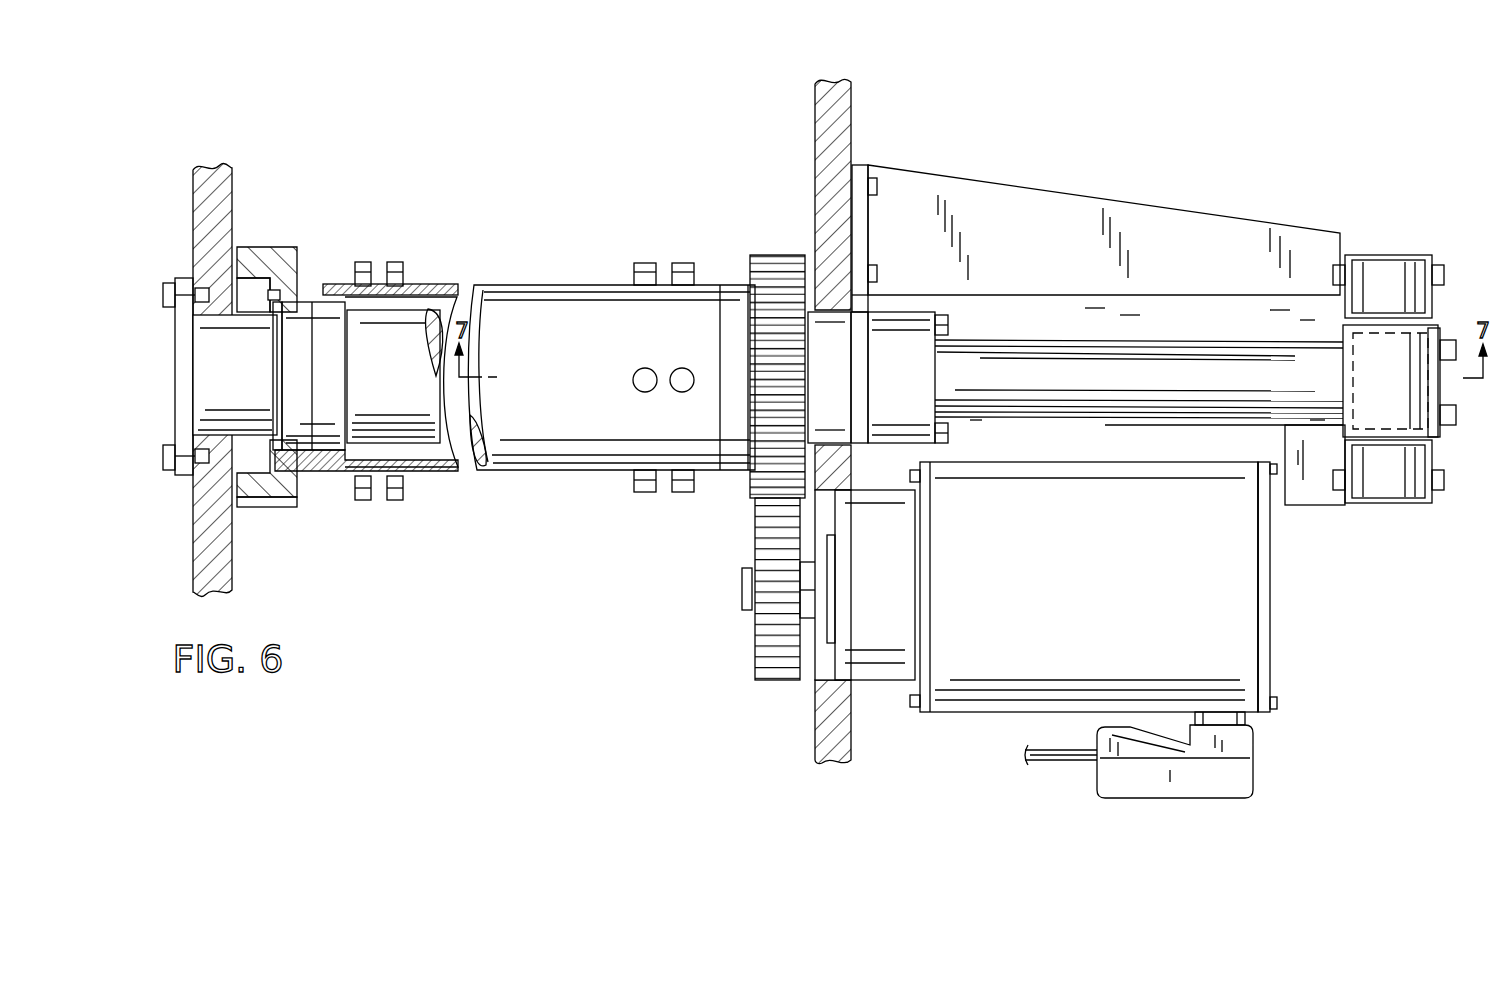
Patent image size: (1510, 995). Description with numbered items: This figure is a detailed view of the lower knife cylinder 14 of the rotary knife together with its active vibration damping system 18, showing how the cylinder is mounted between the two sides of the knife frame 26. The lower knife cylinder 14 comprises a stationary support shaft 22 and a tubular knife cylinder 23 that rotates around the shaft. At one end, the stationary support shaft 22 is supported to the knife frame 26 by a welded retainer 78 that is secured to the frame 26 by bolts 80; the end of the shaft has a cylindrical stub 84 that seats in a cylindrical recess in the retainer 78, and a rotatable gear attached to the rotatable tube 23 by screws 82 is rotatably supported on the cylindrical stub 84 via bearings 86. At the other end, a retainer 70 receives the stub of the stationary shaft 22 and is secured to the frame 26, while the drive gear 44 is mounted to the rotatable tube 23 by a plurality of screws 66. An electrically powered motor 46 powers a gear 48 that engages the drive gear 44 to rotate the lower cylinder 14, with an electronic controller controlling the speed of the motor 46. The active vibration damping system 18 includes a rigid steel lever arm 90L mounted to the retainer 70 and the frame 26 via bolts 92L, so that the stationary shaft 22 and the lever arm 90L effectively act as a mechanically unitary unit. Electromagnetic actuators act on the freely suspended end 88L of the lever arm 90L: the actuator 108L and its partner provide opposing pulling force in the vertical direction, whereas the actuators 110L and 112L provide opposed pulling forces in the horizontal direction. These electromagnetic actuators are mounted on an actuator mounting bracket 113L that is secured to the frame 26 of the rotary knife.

The knife frame 26 is at (216, 168).
The bolts 80 is at (174, 283).
The retainer 78 is at (184, 358).
The screws 82 is at (260, 262).
The cylindrical stub 84 is at (272, 478).
The bearings 86 is at (304, 442).
The tubular knife cylinder 23 is at (340, 286).
The stationary support shaft 22 is at (432, 295).
The lower knife cylinder 14 is at (553, 285).
The screws 66 is at (645, 263).
The drive gear 44 is at (756, 260).
The gear 48 is at (757, 656).
The retainer 70 is at (862, 440).
The bolts 92L is at (950, 327).
The active vibration damping system 18 is at (1100, 234).
The actuator mounting bracket 113L is at (1150, 213).
The lever arm 90L is at (1145, 398).
The electromagnetic actuator 110L is at (1388, 266).
The electromagnetic actuator 108L is at (1440, 330).
The freely suspended end 88L is at (1428, 428).
The electromagnetic actuator 112L is at (1385, 497).
The electric motor 46 is at (1252, 572).